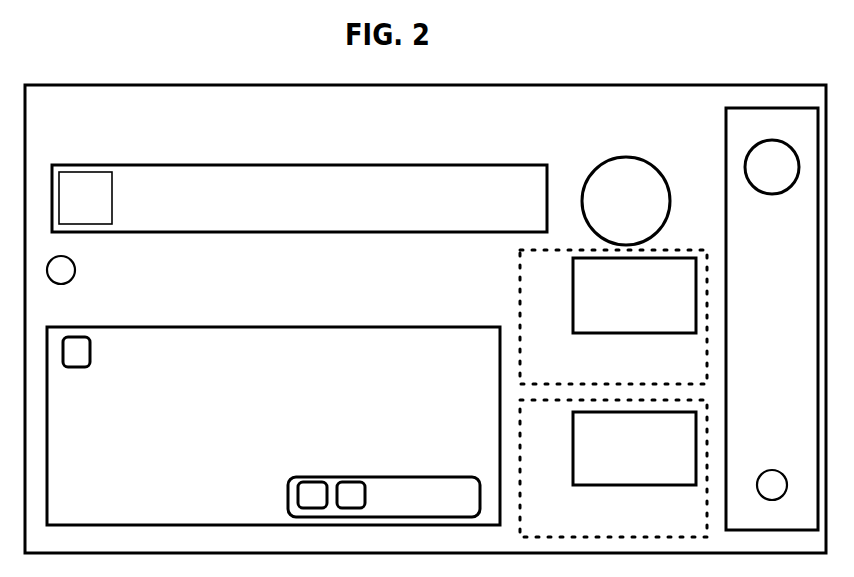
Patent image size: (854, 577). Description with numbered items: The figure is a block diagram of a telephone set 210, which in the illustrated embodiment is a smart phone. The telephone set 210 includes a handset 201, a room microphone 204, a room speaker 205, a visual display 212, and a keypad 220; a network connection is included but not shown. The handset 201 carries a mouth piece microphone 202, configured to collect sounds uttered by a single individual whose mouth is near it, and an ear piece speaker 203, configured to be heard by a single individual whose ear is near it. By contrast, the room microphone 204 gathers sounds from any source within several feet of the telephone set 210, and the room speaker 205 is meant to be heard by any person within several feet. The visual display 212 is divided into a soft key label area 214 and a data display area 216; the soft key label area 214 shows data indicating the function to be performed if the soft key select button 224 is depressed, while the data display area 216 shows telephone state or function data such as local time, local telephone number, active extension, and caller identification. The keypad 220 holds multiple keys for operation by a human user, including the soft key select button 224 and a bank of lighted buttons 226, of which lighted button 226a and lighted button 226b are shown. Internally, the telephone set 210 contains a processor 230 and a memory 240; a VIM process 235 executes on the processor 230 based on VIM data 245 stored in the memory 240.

The handset 201 is at (795, 125).
The mouth piece microphone 202 is at (778, 472).
The ear piece speaker 203 is at (773, 172).
The room microphone 204 is at (63, 267).
The room speaker 205 is at (646, 197).
The telephone set 210 is at (70, 123).
The visual display 212 is at (173, 166).
The soft key label area 214 is at (82, 203).
The data display area 216 is at (444, 213).
The keypad 220 is at (97, 473).
The soft key select button 224 is at (82, 364).
The bank of lighted buttons 226 is at (460, 487).
The lighted button 226a is at (312, 494).
The lighted button 226b is at (352, 488).
The processor 230 is at (562, 348).
The VIM process 235 is at (620, 295).
The memory 240 is at (562, 499).
The VIM data 245 is at (620, 445).